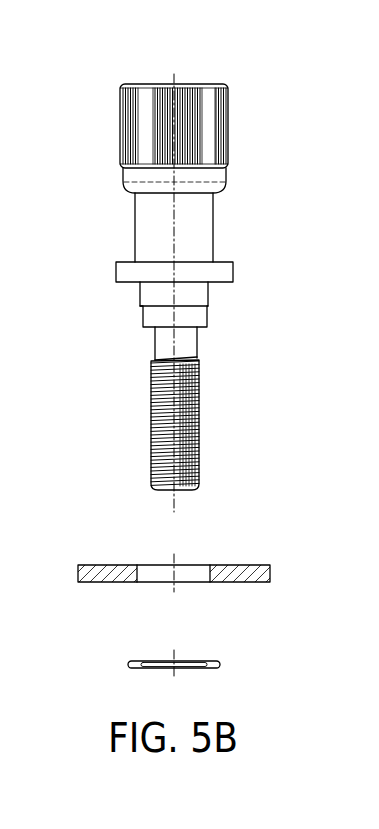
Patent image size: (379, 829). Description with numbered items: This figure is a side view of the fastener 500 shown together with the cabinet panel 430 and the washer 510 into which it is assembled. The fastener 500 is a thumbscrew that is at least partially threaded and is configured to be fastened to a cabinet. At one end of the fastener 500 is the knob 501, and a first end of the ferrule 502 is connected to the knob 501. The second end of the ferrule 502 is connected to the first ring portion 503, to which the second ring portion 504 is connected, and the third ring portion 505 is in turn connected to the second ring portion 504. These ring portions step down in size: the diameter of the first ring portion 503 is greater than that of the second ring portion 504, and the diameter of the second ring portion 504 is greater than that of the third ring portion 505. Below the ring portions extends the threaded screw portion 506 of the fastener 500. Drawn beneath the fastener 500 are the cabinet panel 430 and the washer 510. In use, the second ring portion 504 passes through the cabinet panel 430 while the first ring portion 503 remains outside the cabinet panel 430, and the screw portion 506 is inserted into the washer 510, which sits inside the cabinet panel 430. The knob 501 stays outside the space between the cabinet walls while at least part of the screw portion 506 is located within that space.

The fastener 500 is at (241, 63).
The knob 501 is at (230, 128).
The ferrule 502 is at (200, 238).
The first ring portion 503 is at (117, 273).
The second ring portion 504 is at (145, 290).
The third ring portion 505 is at (203, 313).
The screw portion 506 is at (150, 425).
The cabinet panel 430 is at (272, 573).
The washer 510 is at (222, 665).